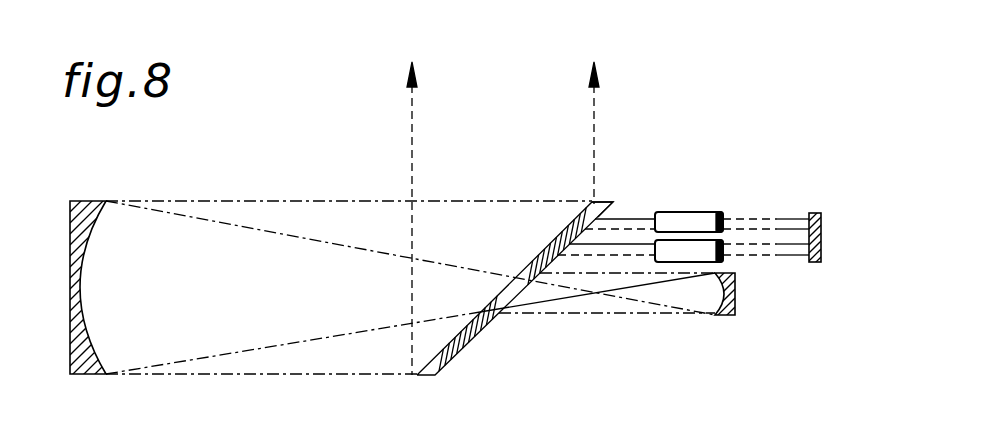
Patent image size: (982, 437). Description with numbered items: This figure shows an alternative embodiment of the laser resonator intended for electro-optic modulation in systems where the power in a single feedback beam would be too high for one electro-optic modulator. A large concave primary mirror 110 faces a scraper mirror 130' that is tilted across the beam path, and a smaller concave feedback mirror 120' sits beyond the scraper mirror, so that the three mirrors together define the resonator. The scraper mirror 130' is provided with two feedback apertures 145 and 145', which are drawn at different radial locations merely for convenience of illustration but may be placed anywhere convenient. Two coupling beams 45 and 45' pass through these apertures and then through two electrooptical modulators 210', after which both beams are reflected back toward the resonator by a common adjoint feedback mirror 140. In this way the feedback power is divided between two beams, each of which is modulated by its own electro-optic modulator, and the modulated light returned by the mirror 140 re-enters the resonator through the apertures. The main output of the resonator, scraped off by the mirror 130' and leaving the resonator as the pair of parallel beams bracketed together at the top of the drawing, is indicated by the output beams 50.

The primary mirror 110 is at (100, 200).
The output beams 50 is at (602, 53).
The scraper mirror 130' is at (461, 344).
The feedback aperture 145 is at (545, 254).
The feedback aperture 145' is at (564, 215).
The electrooptical modulators 210' is at (679, 213).
The coupling beam 45' is at (766, 202).
The output feedback beam 45 is at (766, 268).
The adjoint feedback mirror 140 is at (821, 212).
The feedback mirror 120' is at (750, 301).